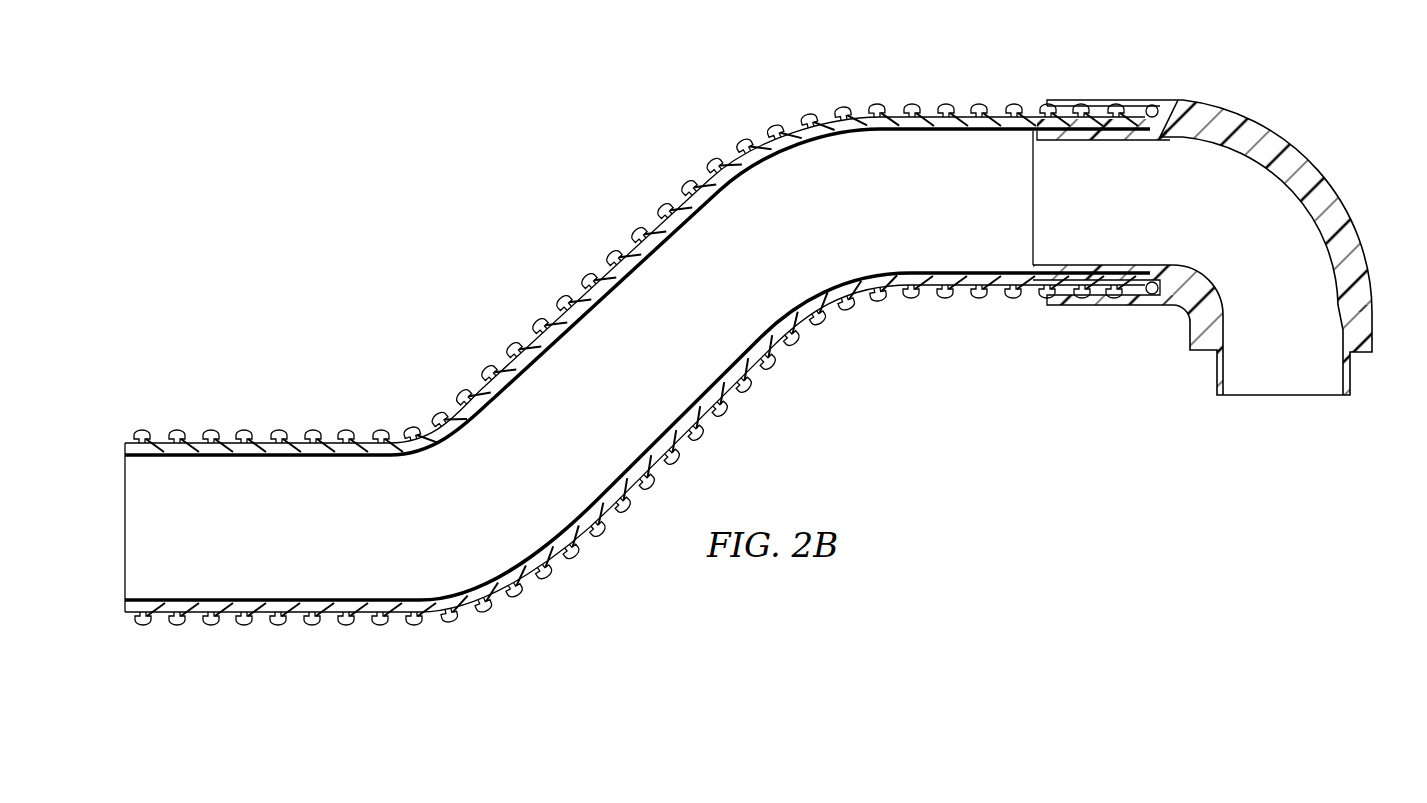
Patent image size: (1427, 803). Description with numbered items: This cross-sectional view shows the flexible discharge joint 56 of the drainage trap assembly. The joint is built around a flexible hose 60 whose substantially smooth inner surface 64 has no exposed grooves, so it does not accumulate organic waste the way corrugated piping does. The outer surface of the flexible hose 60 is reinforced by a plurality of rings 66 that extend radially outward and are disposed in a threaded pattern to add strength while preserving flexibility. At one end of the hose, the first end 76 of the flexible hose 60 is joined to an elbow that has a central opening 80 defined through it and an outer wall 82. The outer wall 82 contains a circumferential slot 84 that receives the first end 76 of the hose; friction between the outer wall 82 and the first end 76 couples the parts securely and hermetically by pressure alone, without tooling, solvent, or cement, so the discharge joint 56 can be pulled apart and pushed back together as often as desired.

The flexible discharge joint 56 is at (764, 333).
The flexible hose 60 is at (428, 423).
The substantially smooth inner surface 64 is at (563, 339).
The rings 66 is at (650, 236).
The first end 76 is at (1083, 117).
The central opening 80 is at (1043, 232).
The outer wall 82 is at (1347, 208).
The circumferential slot 84 is at (1149, 105).